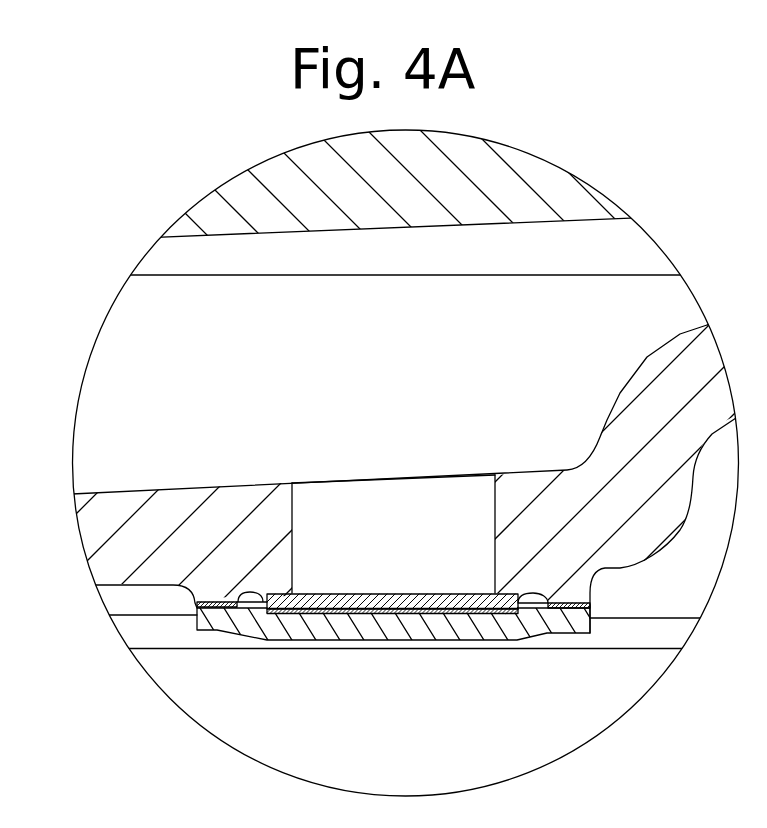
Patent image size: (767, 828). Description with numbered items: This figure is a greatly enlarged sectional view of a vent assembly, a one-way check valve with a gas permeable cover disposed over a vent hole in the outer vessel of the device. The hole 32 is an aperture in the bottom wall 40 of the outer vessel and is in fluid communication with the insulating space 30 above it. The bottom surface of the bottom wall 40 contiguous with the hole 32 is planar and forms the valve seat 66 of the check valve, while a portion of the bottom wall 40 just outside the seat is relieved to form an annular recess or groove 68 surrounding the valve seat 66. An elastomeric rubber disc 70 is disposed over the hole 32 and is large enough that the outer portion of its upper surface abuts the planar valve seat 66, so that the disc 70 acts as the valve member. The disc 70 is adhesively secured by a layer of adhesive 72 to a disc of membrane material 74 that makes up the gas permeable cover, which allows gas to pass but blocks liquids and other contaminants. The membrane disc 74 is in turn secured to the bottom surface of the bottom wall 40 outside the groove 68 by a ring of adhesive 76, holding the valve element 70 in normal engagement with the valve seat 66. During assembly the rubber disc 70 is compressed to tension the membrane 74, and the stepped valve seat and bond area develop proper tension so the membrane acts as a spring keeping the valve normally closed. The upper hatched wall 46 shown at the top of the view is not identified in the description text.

The insulating space 30 is at (160, 358).
The upper wall portion 46 is at (528, 197).
The bottom wall 40 is at (160, 558).
The hole 32 is at (292, 542).
The valve seat 66 is at (283, 593).
The annular recess or groove 68 is at (248, 592).
The elastomeric disc 70 is at (405, 597).
The layer of adhesive 72 is at (335, 614).
The gas permeable membrane disc 74 is at (477, 632).
The ring of adhesive 76 is at (212, 607).